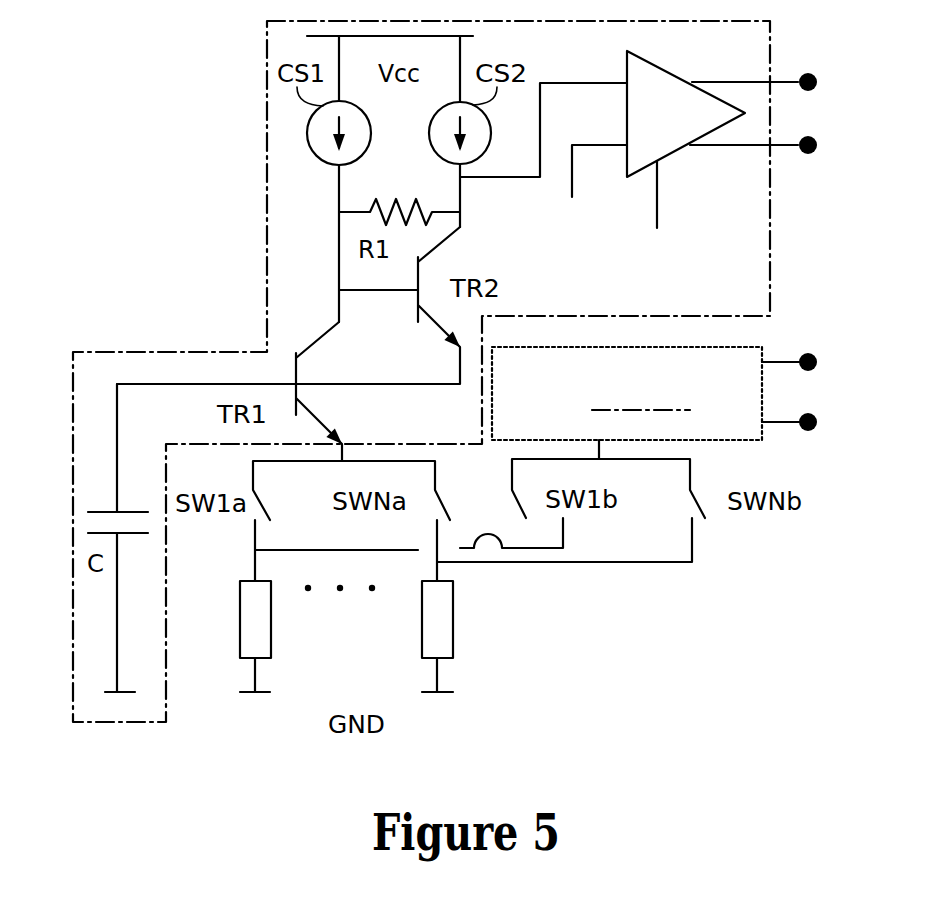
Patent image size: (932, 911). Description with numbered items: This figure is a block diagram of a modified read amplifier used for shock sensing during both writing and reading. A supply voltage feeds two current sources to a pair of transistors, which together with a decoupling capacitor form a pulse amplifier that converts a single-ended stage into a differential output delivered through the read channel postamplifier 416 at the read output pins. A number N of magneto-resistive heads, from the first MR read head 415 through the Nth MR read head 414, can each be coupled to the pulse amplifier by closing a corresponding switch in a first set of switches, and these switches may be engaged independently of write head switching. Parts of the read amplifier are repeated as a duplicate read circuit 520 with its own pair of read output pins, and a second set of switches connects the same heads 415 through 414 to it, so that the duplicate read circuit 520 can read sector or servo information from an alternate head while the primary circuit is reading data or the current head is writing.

The MR read head N 414 is at (453, 647).
The MR read head 1 415 is at (242, 653).
The read channel postamplifier 416 is at (677, 152).
The duplicate read circuit 520 is at (692, 393).